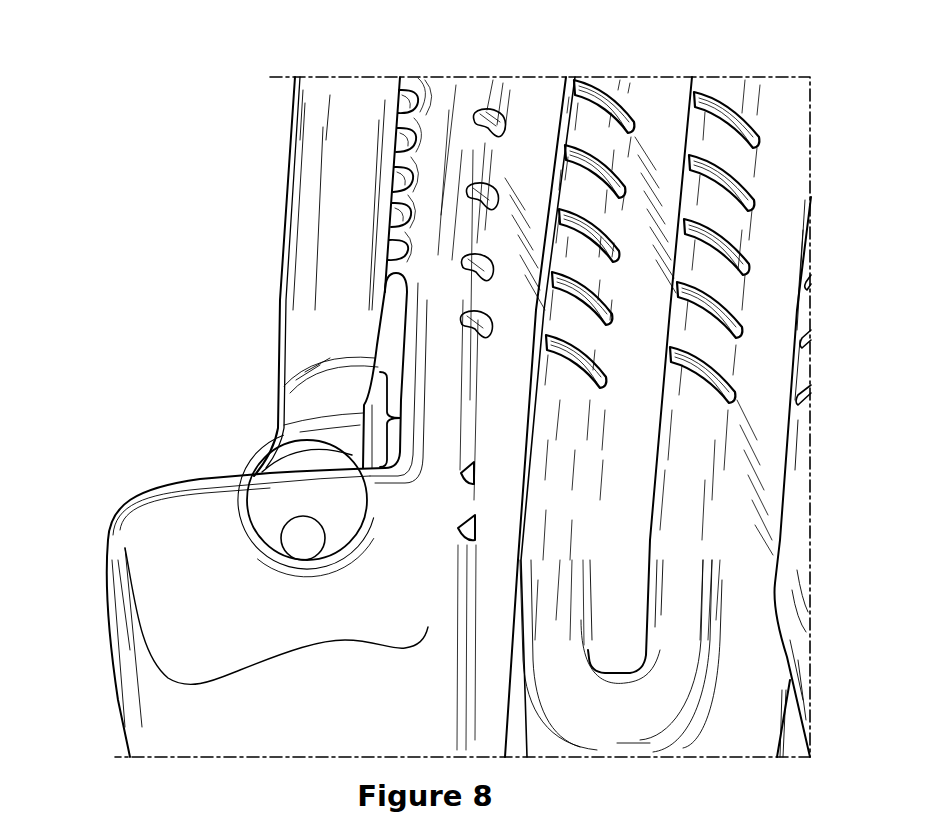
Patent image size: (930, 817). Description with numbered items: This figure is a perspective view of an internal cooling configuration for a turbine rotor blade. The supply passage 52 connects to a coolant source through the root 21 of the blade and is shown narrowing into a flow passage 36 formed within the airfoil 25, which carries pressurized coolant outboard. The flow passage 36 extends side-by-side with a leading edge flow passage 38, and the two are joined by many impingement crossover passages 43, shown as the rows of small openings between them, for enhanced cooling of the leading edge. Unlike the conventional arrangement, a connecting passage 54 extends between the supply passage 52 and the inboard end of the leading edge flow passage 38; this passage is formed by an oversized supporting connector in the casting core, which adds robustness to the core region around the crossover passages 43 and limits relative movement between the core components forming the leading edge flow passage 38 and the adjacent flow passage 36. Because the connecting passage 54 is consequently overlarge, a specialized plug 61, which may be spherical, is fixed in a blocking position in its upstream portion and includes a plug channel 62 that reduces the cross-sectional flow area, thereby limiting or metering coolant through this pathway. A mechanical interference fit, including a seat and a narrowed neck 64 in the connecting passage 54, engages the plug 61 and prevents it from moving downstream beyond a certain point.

The root 21 is at (74, 600).
The airfoil 25 is at (170, 172).
The flow passage 36 is at (340, 127).
The leading edge flow passage 38 is at (307, 210).
The impingement crossover passages 43 is at (410, 90).
The supply passage 52 is at (170, 632).
The connecting passage 54 is at (400, 418).
The plug 61 is at (293, 458).
The plug channel 62 is at (290, 550).
The neck 64 is at (263, 370).